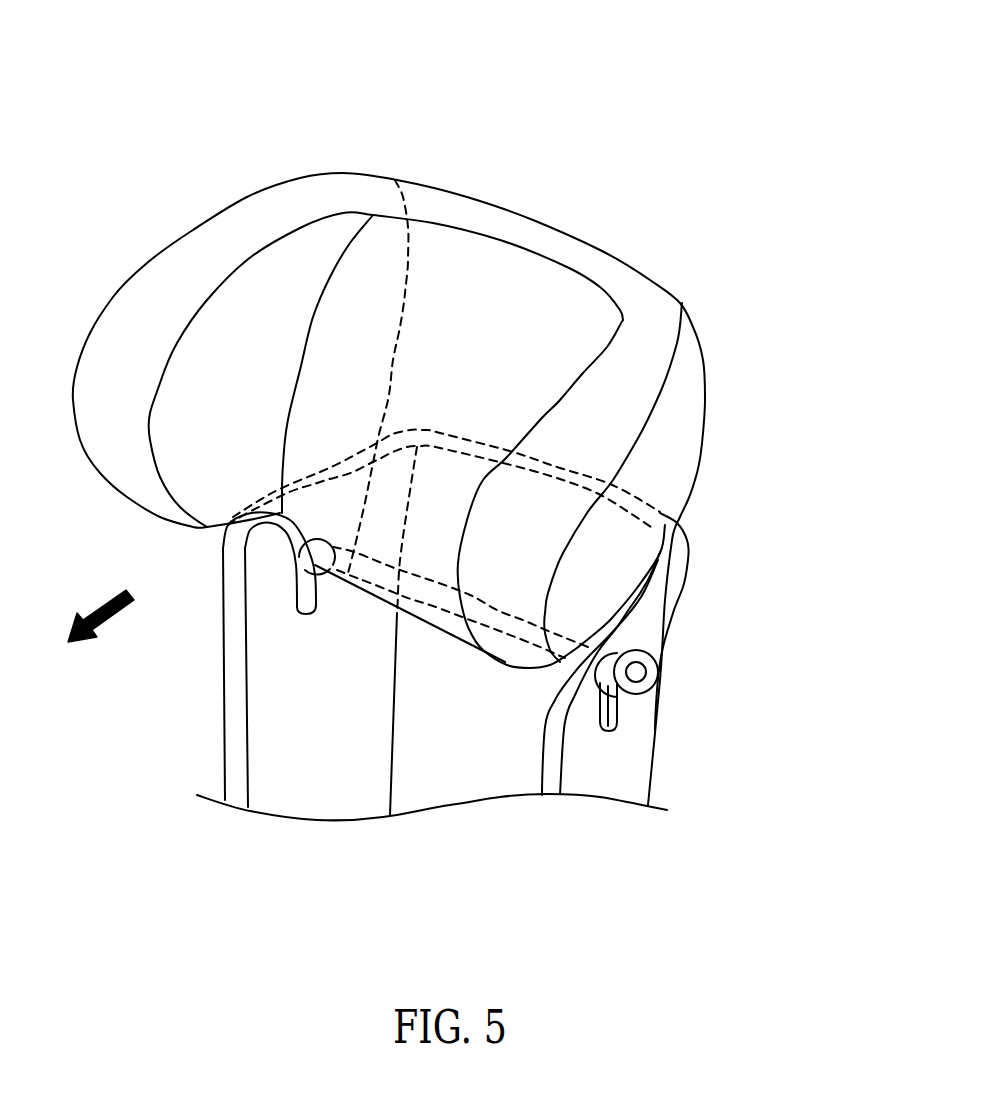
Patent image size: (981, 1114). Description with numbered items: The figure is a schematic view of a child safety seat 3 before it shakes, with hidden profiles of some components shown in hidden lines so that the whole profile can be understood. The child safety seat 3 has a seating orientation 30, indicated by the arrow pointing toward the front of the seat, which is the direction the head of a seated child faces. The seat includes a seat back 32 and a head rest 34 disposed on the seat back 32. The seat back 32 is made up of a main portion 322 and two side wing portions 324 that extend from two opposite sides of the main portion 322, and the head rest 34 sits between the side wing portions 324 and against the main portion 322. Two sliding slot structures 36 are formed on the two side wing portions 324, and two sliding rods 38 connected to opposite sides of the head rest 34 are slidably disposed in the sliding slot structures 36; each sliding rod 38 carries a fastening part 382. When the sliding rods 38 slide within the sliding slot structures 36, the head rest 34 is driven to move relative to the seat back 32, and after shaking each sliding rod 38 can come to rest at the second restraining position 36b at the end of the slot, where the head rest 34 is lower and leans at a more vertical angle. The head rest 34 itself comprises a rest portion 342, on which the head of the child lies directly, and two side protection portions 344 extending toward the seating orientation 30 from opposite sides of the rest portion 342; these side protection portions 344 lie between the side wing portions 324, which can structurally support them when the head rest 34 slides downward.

The child safety seat 3 is at (175, 82).
The seating orientation 30 is at (103, 607).
The seat back 32 is at (617, 860).
The main portion 322 is at (463, 795).
The side wing portions 324 is at (318, 795).
The head rest 34 is at (767, 157).
The rest portion 342 is at (495, 262).
The side protection portions 344 is at (308, 240).
The sliding slot structures 36 is at (293, 588).
The second restraining position 36b is at (290, 618).
The sliding rods 38 is at (337, 583).
The fastening part 382 is at (653, 664).